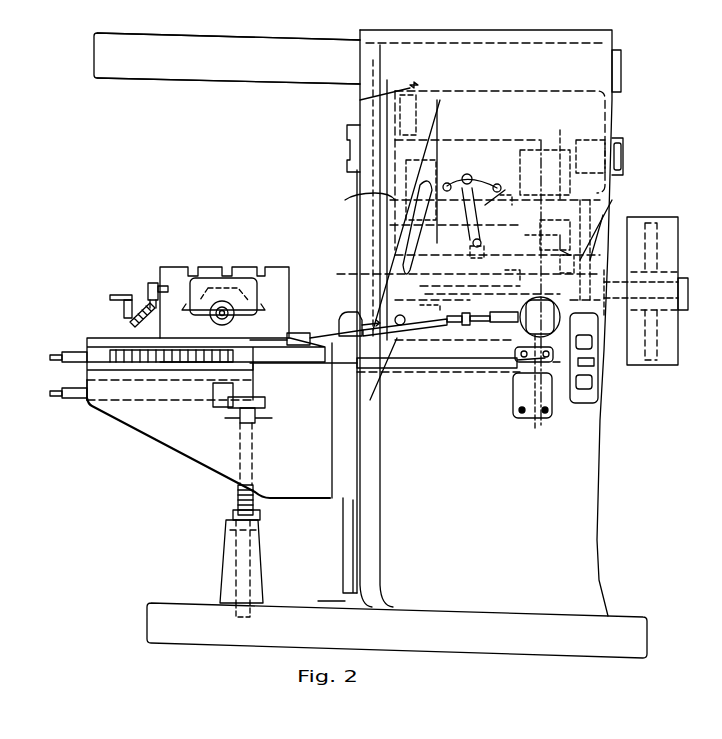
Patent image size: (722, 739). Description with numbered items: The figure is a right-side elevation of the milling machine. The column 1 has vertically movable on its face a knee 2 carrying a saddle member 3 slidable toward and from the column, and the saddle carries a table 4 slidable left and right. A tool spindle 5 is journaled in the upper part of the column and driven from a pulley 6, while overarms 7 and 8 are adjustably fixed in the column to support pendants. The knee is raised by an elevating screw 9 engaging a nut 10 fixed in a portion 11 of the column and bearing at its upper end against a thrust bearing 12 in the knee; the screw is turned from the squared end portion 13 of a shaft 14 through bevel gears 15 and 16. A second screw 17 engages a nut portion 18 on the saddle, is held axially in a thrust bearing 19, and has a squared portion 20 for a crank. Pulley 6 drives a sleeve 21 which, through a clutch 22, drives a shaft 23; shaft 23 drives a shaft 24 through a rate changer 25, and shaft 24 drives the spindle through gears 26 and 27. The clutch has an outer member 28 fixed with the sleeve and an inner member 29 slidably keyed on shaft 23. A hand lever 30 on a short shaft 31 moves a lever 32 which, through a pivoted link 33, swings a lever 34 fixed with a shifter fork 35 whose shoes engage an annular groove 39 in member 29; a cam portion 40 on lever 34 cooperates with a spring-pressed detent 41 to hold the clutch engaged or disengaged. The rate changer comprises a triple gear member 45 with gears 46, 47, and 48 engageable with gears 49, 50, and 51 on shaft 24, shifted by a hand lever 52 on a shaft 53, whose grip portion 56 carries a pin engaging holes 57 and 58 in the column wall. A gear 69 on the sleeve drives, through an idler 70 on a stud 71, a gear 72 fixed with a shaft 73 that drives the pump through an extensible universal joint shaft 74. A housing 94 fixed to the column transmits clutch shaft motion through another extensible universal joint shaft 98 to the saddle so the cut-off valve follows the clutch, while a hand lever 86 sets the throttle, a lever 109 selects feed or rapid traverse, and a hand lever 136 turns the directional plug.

The column 1 is at (598, 492).
The knee 2 is at (160, 432).
The saddle member 3 is at (280, 322).
The table 4 is at (285, 275).
The tool spindle 5 is at (345, 172).
The pulley 6 is at (668, 366).
The overarm 7 is at (147, 80).
The overarm 8 is at (228, 58).
The elevating screw 9 is at (236, 490).
The nut 10 is at (262, 514).
The portion of column 11 is at (222, 530).
The thrust bearing 12 is at (255, 398).
The squared end portion 13 is at (54, 390).
The shaft 14 is at (128, 394).
The bevel gear 15 is at (225, 402).
The bevel gear 16 is at (235, 420).
The second screw 17 is at (140, 362).
The nut portion 18 is at (170, 348).
The thrust bearing 19 is at (95, 362).
The squared portion 20 is at (52, 352).
The sleeve 21 is at (604, 268).
The clutch 22 is at (560, 238).
The shaft 23 is at (436, 292).
The shaft 24 is at (528, 232).
The rate changer 25 is at (505, 190).
The gear 26 is at (405, 235).
The gear 27 is at (360, 100).
The outer clutch member 28 is at (612, 200).
The inner clutch member 29 is at (560, 260).
The hand lever 30 is at (355, 198).
The short shaft 31 is at (396, 315).
The lever 32 is at (380, 380).
The pivoted link 33 is at (440, 368).
The lever 34 is at (520, 320).
The shifter fork 35 is at (525, 296).
The annular groove 39 is at (536, 270).
The cam portion 40 is at (520, 358).
The detent 41 is at (515, 386).
The triple gear member 45 is at (472, 252).
The gear 46 is at (450, 322).
The gear 47 is at (466, 324).
The gear 48 is at (484, 322).
The gear 49 is at (428, 195).
The gear 50 is at (476, 190).
The gear 51 is at (514, 196).
The hand lever 52 is at (447, 185).
The shaft 53 is at (481, 242).
The grip portion 56 is at (468, 176).
The hole 57 is at (440, 170).
The hole 58 is at (495, 184).
The gear 69 is at (603, 215).
The idler 70 is at (598, 330).
The stud 71 is at (598, 342).
The gear 72 is at (588, 398).
The shaft 73 is at (600, 378).
The extensible universal joint shaft 74 is at (395, 384).
The hand lever 86 is at (128, 322).
The housing 94 is at (245, 265).
The extensible universal joint shaft 98 is at (342, 314).
The lever 109 is at (110, 297).
The hand lever 136 is at (128, 282).